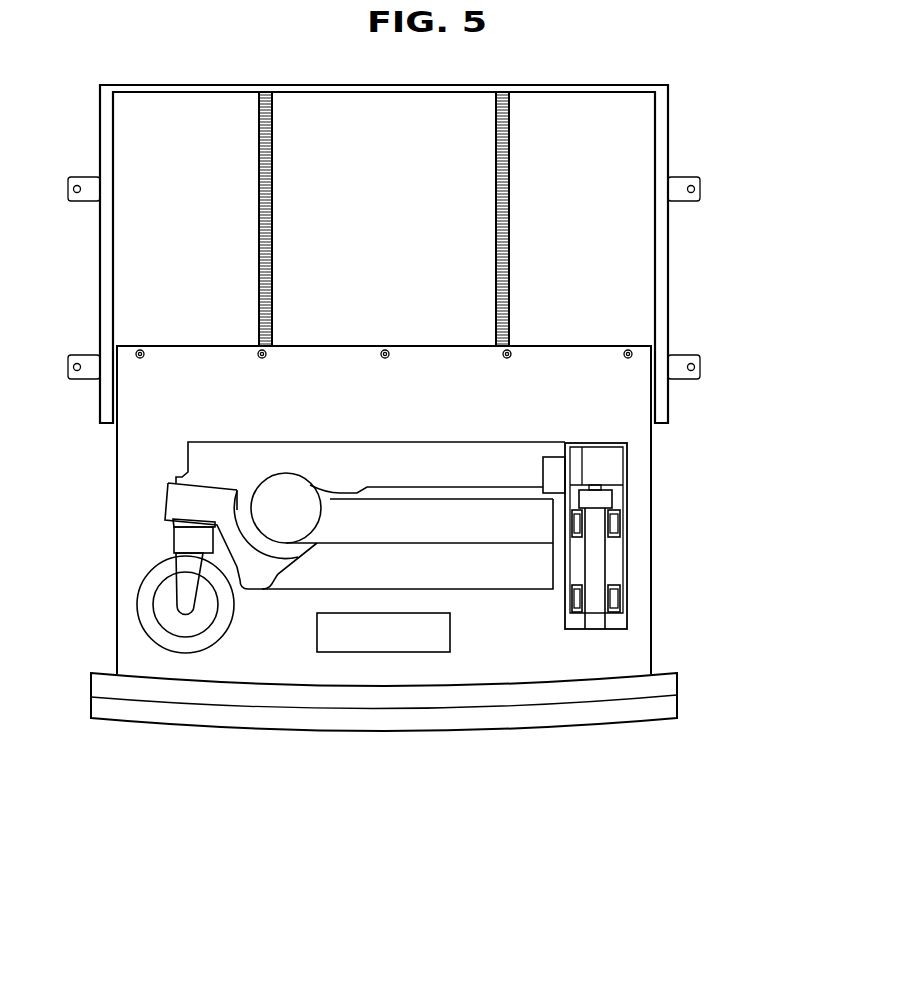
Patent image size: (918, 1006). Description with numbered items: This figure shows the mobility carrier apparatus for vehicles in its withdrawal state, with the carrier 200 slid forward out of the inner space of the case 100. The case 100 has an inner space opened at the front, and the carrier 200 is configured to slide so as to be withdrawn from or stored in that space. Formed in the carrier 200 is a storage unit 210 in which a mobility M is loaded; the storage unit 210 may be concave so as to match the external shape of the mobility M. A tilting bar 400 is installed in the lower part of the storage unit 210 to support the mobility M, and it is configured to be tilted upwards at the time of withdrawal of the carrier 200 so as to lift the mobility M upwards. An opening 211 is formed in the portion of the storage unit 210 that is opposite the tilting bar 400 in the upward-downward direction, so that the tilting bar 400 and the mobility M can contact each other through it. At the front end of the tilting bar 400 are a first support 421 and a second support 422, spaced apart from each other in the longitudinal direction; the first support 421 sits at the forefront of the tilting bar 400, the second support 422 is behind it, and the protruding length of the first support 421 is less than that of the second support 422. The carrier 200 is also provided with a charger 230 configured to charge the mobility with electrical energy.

The case 100 is at (682, 235).
The carrier 200 is at (518, 749).
The storage unit 210 is at (222, 556).
The opening 211 is at (597, 613).
The charger 230 is at (372, 638).
The tilting bar 400 is at (670, 557).
The first support 421 is at (620, 595).
The second support 422 is at (620, 523).
The mobility M is at (283, 508).